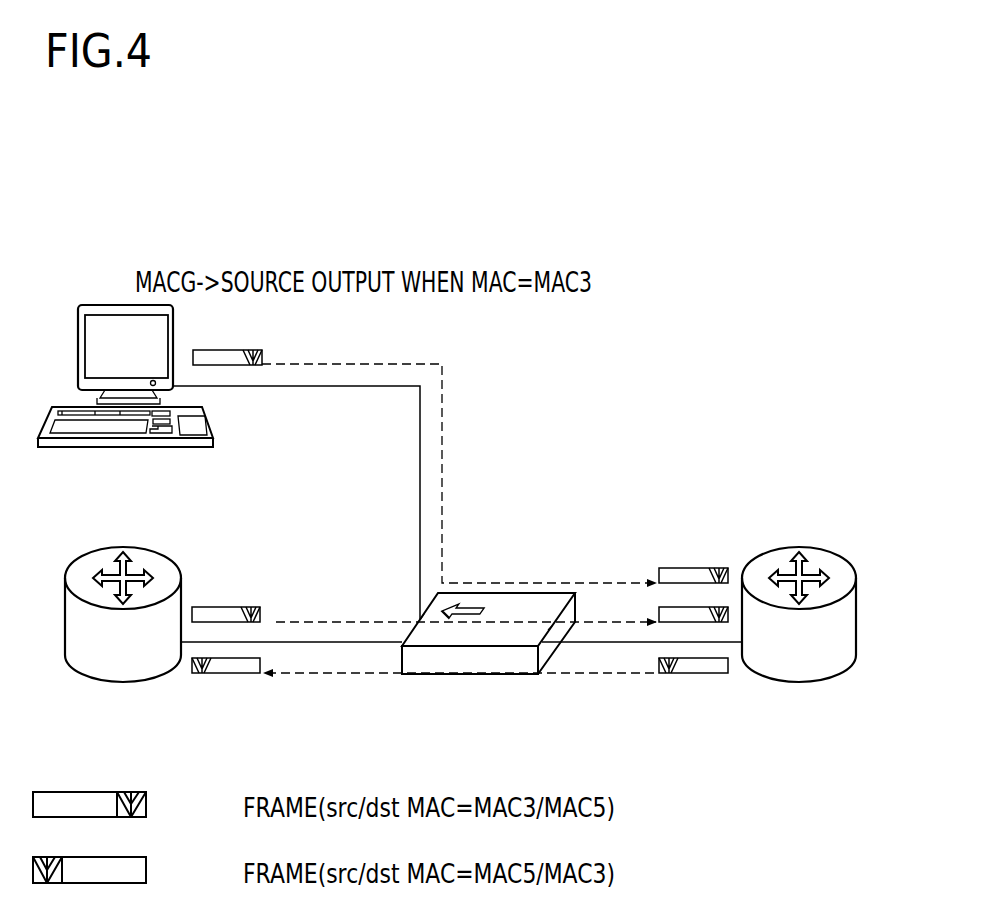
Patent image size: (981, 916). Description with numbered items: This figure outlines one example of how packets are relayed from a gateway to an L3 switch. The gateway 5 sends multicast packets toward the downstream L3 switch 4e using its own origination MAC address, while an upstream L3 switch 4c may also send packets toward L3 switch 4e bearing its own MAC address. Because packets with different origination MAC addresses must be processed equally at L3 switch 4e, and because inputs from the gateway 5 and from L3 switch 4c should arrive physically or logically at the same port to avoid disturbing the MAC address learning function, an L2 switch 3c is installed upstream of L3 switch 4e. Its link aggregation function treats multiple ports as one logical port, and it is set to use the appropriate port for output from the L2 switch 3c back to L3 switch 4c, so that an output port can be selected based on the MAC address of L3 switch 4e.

The gateway 5 is at (78, 330).
The L3 switch 4c is at (65, 597).
The L3 switch 4e is at (834, 549).
The L2 switch 3c is at (511, 675).